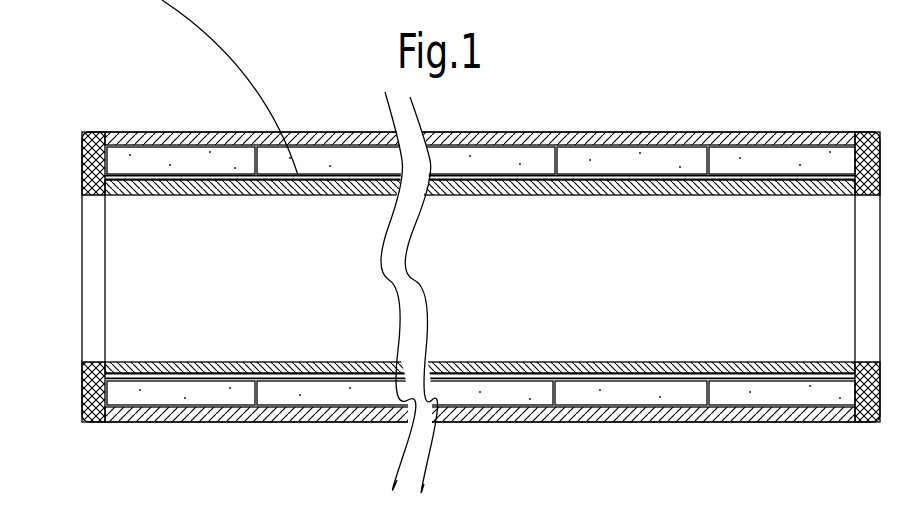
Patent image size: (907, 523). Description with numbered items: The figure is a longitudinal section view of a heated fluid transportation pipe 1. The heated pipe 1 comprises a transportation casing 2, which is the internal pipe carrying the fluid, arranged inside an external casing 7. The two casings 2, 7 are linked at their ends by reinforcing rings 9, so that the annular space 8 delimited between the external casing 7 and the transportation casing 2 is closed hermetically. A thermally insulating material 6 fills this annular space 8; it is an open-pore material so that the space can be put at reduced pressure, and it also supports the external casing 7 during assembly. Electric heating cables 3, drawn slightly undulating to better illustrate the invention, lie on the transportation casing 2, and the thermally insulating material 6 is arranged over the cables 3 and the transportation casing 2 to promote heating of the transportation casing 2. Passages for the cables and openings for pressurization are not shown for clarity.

The heated fluid transportation pipe 1 is at (820, 132).
The transportation casing 2 is at (688, 190).
The electric heating cables 3 is at (688, 178).
The thermally insulating material 6 is at (765, 150).
The external casing 7 is at (507, 131).
The annular space 8 is at (100, 408).
The reinforcing rings 9 is at (868, 134).